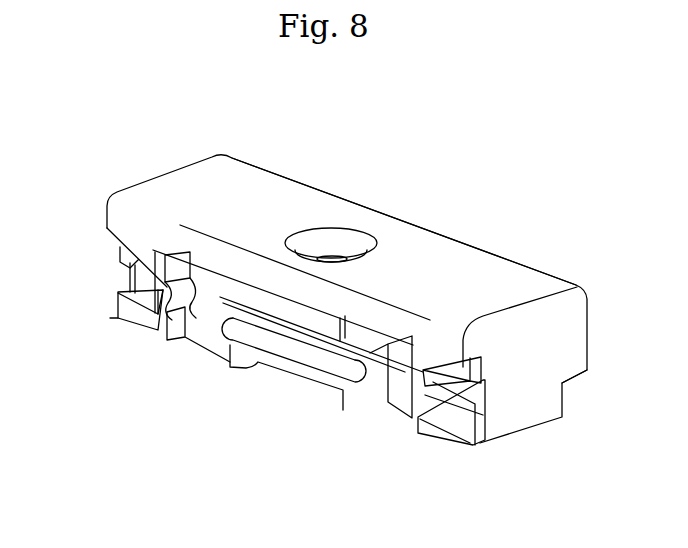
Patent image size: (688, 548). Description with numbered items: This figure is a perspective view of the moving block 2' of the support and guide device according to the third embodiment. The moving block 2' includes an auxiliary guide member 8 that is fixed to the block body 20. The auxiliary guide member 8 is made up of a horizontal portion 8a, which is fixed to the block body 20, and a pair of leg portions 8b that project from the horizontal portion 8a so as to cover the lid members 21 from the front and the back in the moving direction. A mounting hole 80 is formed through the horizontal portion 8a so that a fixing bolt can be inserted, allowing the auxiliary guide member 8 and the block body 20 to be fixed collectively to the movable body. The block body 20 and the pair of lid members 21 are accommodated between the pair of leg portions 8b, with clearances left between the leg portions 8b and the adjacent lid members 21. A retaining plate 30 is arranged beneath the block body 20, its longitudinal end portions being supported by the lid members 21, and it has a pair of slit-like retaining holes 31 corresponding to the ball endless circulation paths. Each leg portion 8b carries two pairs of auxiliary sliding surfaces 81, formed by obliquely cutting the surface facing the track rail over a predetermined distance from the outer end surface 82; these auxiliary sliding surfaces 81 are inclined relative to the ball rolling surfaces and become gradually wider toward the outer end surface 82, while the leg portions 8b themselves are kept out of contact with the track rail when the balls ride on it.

The moving block 2' is at (347, 299).
The auxiliary guide member 8 is at (283, 174).
The horizontal portion 8a is at (425, 247).
The leg portions 8b is at (118, 322).
The mounting hole 80 is at (347, 243).
The auxiliary sliding surfaces 81 is at (138, 270).
The outer end surface 82 is at (550, 358).
The block body 20 is at (307, 357).
The lid members 21 is at (173, 342).
The retaining plate 30 is at (323, 377).
The retaining holes 31 is at (277, 347).